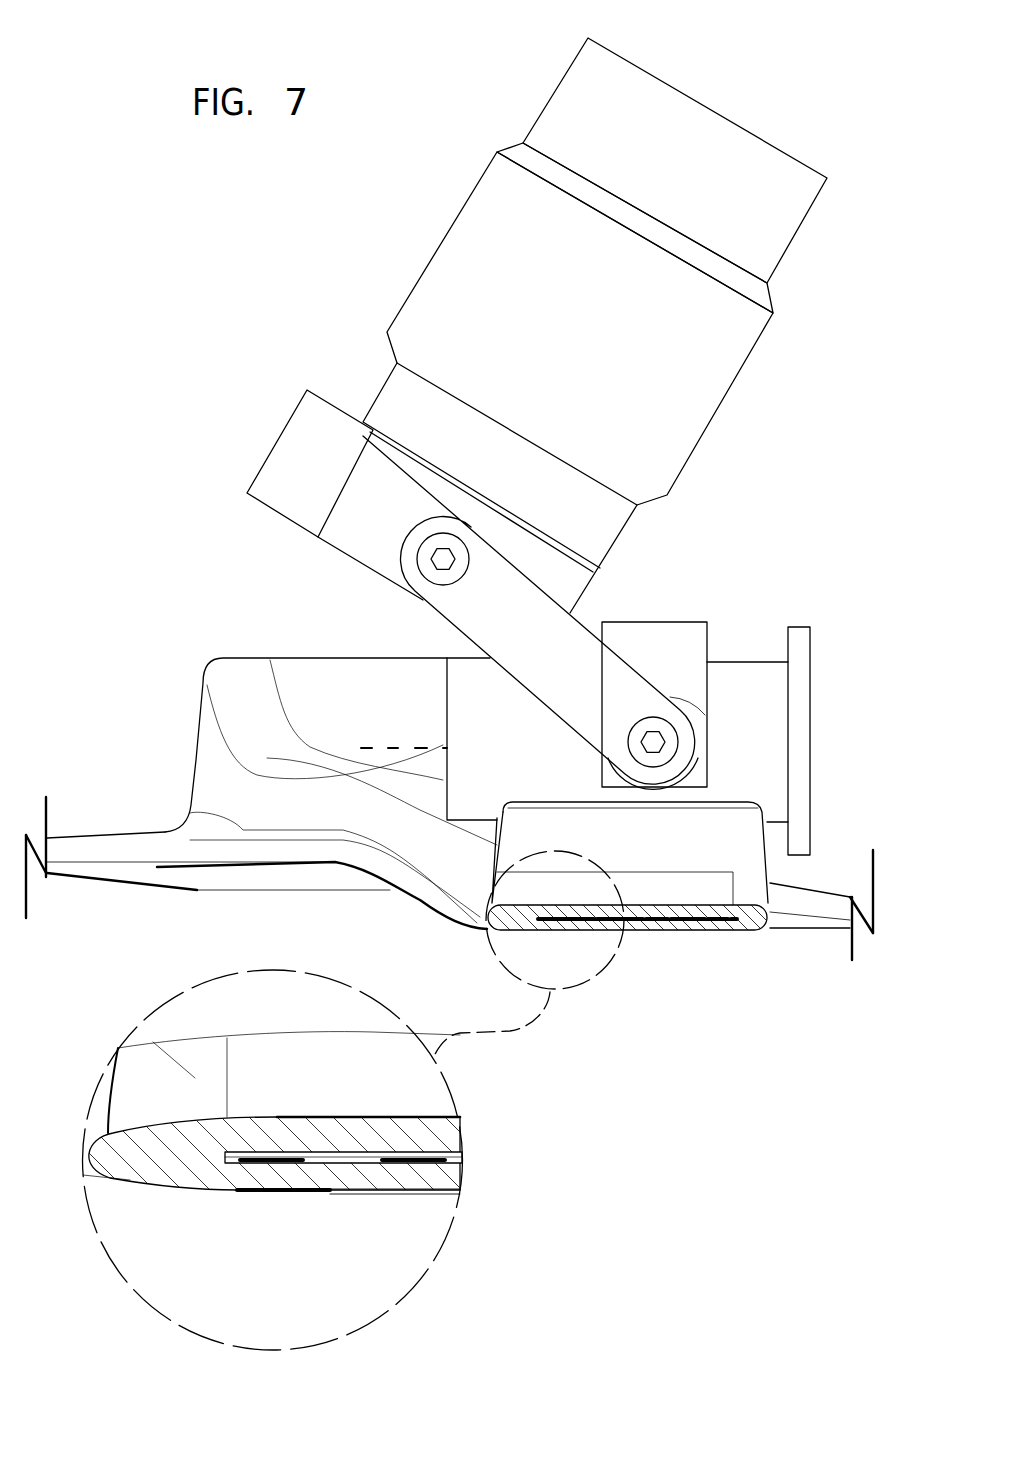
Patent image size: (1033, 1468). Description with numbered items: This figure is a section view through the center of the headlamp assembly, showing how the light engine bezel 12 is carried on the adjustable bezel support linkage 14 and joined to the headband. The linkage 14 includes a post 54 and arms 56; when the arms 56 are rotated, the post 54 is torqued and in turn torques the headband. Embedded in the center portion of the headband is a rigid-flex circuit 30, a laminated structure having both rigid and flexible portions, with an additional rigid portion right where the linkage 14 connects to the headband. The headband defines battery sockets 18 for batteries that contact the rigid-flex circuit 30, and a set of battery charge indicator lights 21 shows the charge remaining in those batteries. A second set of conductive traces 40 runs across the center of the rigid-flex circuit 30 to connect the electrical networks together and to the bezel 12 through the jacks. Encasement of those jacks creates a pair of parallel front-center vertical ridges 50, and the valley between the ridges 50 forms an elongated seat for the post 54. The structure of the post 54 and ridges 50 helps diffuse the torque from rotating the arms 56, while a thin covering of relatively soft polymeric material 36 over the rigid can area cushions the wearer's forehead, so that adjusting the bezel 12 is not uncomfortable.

The light engine bezel 12 is at (786, 368).
The adjustable bezel support linkage 14 is at (793, 570).
The battery sockets 18 is at (203, 756).
The battery charge indicator lights 21 is at (395, 743).
The rigid-flex circuit 30 is at (587, 948).
The soft polymeric material 36 is at (753, 929).
The second set of conductive traces 40 is at (718, 928).
The front-center vertical ridges 50 is at (748, 848).
The post 54 is at (447, 710).
The arms 56 is at (573, 637).